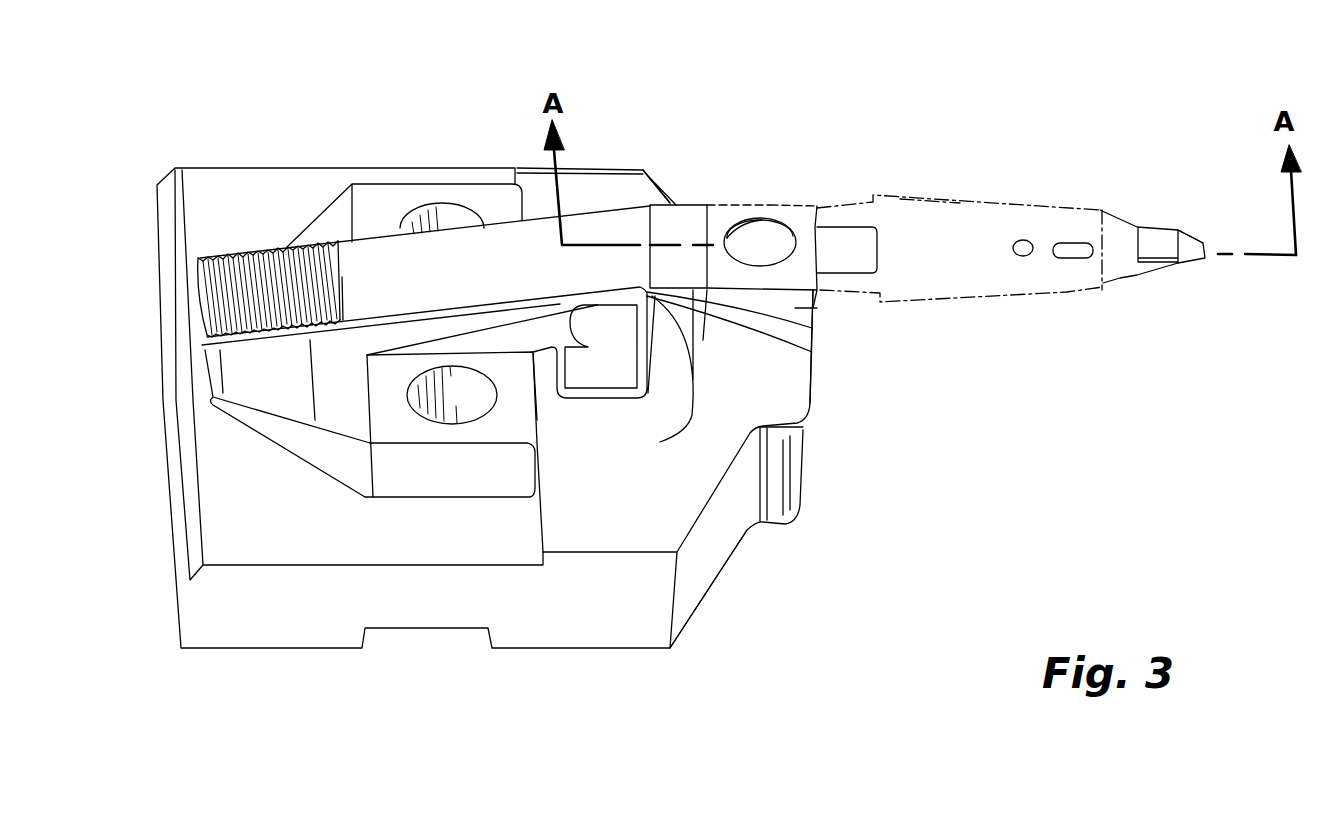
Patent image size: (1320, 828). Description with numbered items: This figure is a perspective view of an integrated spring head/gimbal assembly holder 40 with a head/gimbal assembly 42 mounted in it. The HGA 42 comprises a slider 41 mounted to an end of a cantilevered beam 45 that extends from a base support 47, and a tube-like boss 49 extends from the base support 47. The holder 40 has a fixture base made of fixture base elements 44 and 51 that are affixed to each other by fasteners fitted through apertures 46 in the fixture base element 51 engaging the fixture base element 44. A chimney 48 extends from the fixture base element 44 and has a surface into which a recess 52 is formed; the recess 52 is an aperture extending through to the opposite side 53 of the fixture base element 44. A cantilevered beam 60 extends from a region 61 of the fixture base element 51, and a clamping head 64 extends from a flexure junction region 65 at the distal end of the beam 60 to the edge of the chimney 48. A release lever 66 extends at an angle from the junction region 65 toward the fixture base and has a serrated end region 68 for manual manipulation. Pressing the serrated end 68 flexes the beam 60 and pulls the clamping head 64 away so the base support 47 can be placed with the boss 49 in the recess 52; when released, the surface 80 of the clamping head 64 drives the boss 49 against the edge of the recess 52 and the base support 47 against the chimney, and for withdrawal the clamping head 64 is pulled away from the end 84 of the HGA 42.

The integrated spring head/gimbal assembly holder 40 is at (222, 162).
The slider 41 is at (1156, 233).
The head/gimbal assembly 42 is at (1018, 198).
The fixture base element 44 is at (800, 480).
The cantilevered beam 45 is at (934, 200).
The apertures 46 is at (433, 218).
The base support 47 is at (802, 208).
The chimney 48 is at (787, 398).
The boss 49 is at (757, 227).
The fixture base element 51 is at (383, 483).
The recess 52 is at (774, 245).
The opposite side 53 is at (725, 557).
The cantilevered beam 60 is at (607, 396).
The region 61 is at (569, 345).
The clamping head 64 is at (643, 176).
The flexure junction region 65 is at (812, 352).
The release lever 66 is at (387, 247).
The serrated end region 68 is at (200, 268).
The surface 80 is at (812, 328).
The end 84 is at (726, 214).